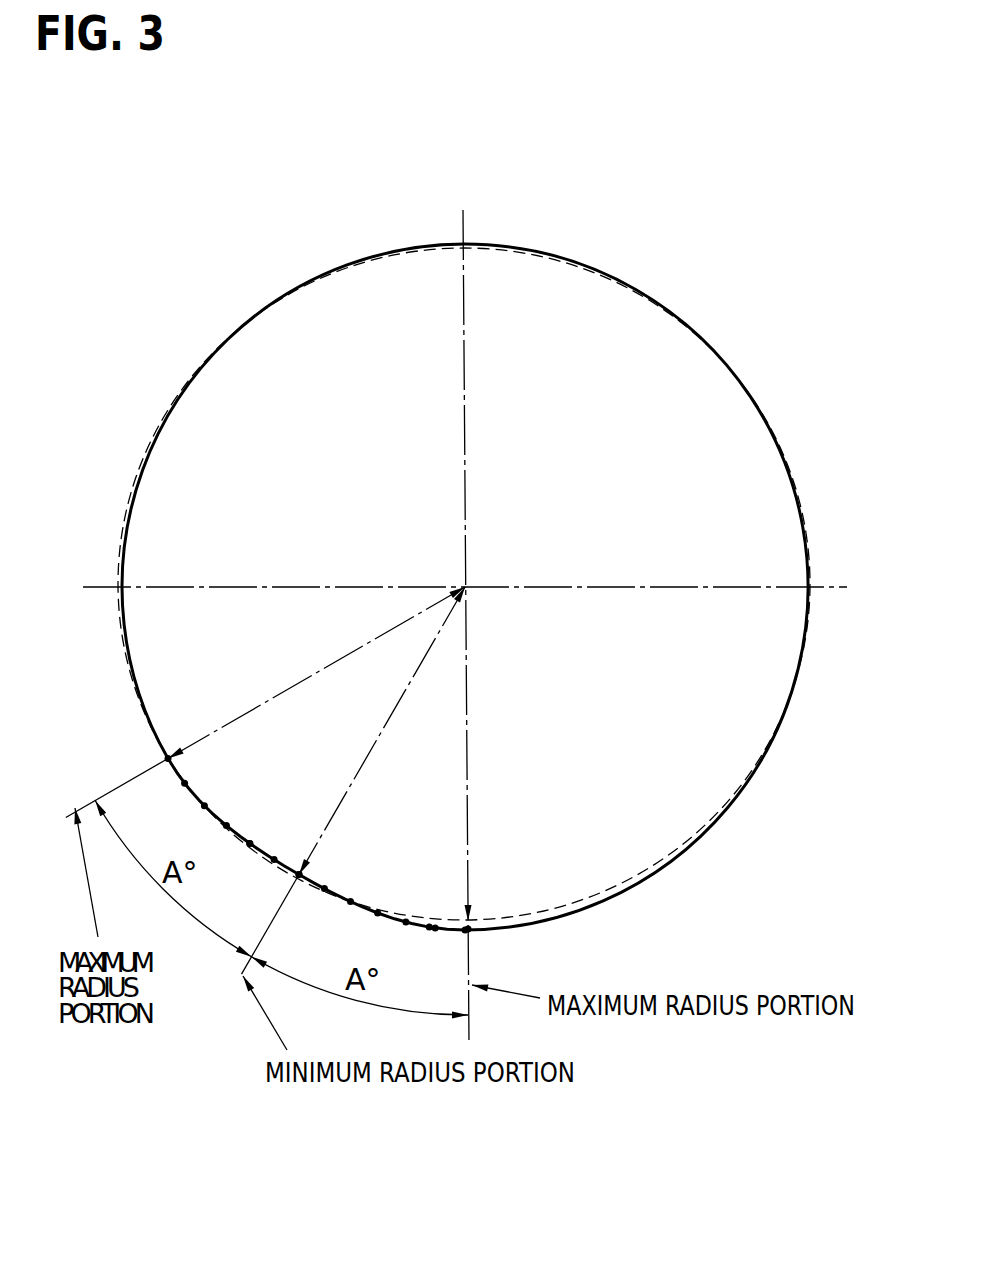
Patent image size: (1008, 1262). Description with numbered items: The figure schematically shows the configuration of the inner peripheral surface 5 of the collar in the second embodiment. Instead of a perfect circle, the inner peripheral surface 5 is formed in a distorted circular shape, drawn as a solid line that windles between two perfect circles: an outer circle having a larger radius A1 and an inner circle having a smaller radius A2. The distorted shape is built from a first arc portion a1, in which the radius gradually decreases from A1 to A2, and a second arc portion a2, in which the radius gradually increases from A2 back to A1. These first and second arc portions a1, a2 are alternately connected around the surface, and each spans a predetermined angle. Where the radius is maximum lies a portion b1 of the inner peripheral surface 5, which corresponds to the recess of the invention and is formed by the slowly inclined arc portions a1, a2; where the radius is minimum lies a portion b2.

The inner peripheral surface 5 is at (770, 422).
The radius A1 is at (269, 754).
The radius A2 is at (354, 780).
The first arc portion a1 is at (424, 928).
The second arc portion a2 is at (246, 841).
The maximum radius portion b1 is at (470, 930).
The minimum radius portion b2 is at (297, 879).